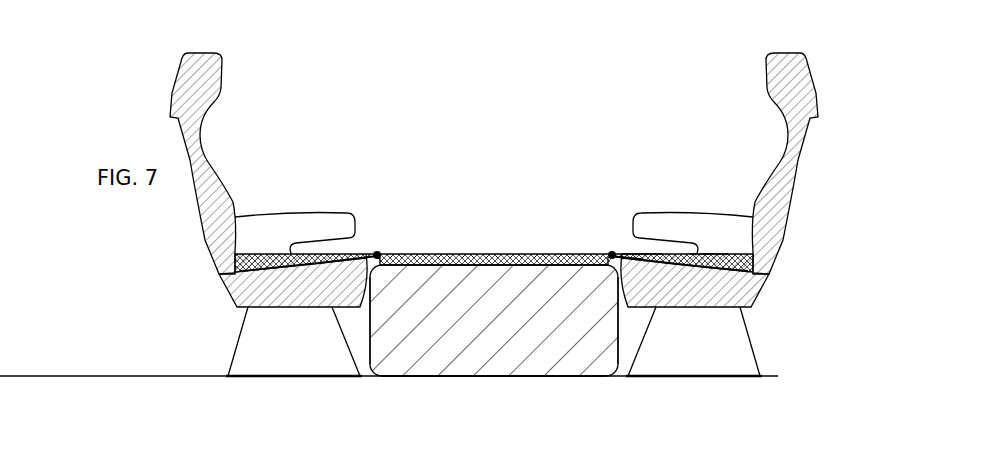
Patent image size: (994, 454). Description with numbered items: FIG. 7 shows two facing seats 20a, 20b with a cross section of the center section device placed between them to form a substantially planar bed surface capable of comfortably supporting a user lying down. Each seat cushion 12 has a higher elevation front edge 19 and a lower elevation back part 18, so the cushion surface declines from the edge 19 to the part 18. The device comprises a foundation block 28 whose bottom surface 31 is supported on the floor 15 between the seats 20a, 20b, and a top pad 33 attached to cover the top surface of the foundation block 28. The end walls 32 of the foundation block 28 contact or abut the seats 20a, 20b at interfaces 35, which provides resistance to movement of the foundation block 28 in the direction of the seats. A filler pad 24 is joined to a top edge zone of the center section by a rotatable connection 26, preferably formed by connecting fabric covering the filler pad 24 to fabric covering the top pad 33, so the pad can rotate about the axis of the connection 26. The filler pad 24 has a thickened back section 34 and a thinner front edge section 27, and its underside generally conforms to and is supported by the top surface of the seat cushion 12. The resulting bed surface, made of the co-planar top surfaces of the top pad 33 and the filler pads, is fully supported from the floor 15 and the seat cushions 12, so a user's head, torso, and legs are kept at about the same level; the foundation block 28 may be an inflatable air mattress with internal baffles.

The seat cushion 12 is at (707, 293).
The floor 15 is at (150, 377).
The lower elevation back part 18 is at (733, 275).
The higher elevation front edge 19 is at (632, 260).
The seat 20a is at (754, 200).
The seat 20b is at (157, 80).
The filler pad 24 is at (708, 252).
The rotatable connection 26 is at (610, 252).
The thinner front edge section 27 is at (642, 252).
The foundation block 28 is at (415, 352).
The bottom surface 31 is at (442, 377).
The end wall 32 is at (368, 340).
The top pad 33 is at (497, 253).
The thickened back section 34 is at (747, 262).
The interface 35 is at (369, 280).